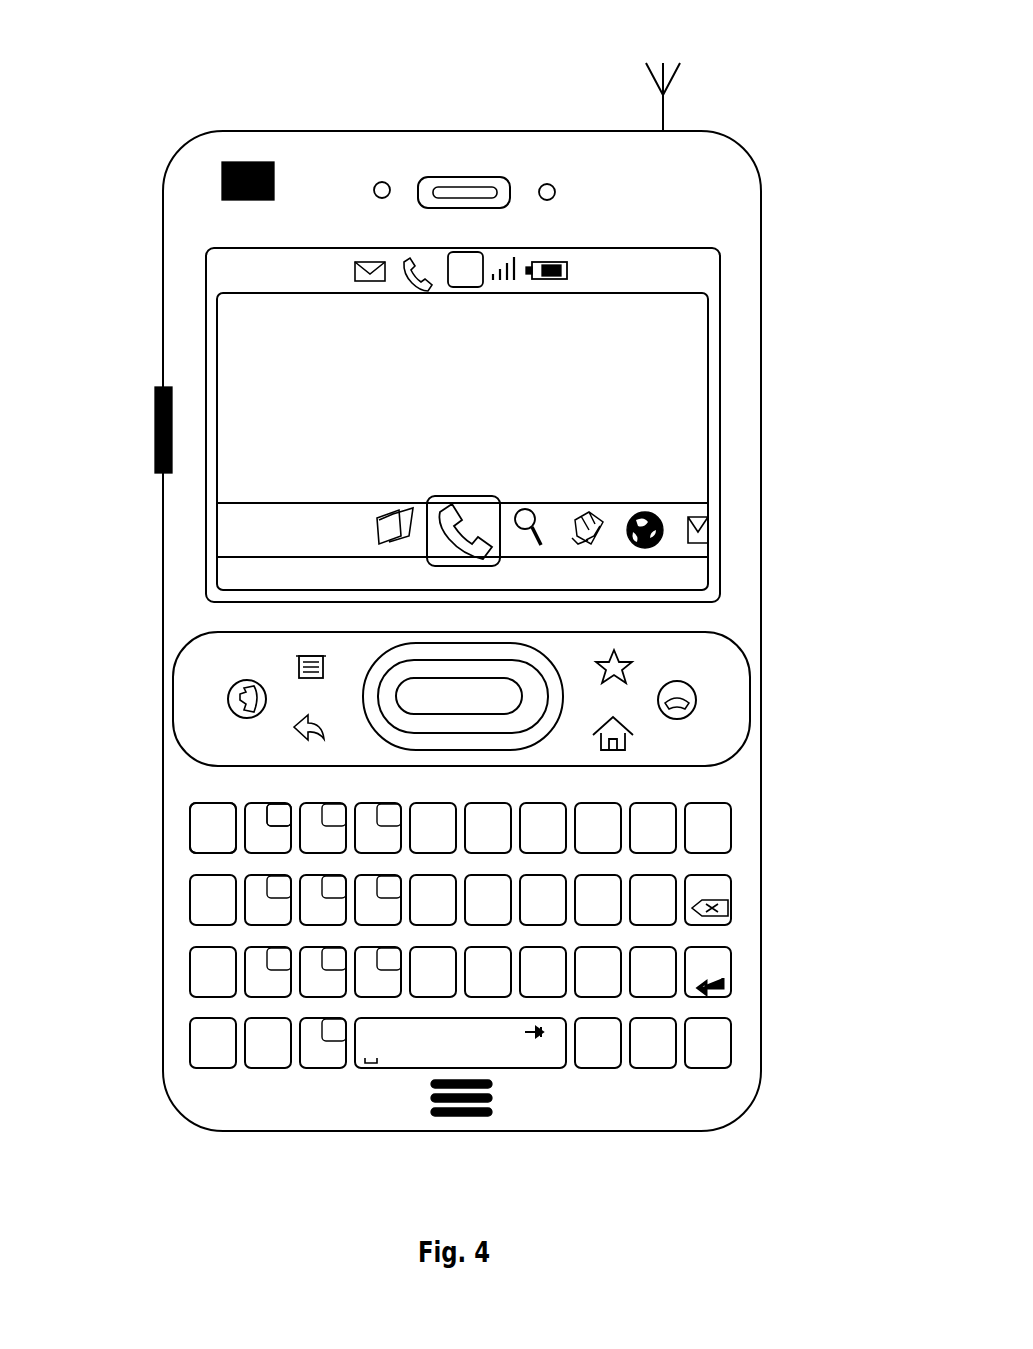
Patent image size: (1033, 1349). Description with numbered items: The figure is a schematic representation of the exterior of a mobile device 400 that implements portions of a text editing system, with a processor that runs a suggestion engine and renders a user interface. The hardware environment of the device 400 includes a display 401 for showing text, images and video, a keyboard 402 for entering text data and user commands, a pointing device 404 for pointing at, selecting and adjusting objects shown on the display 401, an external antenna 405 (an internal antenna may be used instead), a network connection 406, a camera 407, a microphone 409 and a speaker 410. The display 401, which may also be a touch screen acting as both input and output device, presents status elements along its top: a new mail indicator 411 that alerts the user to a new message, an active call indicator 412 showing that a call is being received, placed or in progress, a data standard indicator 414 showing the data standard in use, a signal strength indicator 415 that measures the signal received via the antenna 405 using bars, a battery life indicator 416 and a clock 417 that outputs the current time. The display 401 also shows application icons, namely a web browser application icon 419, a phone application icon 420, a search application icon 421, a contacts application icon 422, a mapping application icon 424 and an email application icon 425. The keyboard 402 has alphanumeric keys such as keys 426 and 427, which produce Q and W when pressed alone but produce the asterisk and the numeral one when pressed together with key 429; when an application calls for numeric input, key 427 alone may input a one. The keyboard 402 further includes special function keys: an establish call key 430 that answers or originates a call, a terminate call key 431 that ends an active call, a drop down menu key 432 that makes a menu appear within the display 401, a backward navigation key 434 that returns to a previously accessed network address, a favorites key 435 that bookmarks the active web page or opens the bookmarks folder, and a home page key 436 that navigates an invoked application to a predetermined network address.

The mobile device 400 is at (112, 50).
The display 401 is at (253, 345).
The keyboard 402 is at (698, 1098).
The pointing device 404 is at (478, 690).
The antenna 405 is at (663, 119).
The network connection 406 is at (155, 430).
The camera 407 is at (274, 180).
The microphone 409 is at (480, 1116).
The speaker 410 is at (471, 178).
The new mail indicator 411 is at (357, 264).
The active call indicator 412 is at (405, 262).
The data standard indicator 414 is at (450, 262).
The signal strength indicator 415 is at (508, 274).
The battery life indicator 416 is at (546, 262).
The clock 417 is at (640, 270).
The web browser application icon 419 is at (378, 521).
The phone application icon 420 is at (454, 496).
The search application icon 421 is at (522, 510).
The contacts application icon 422 is at (587, 510).
The mapping application icon 424 is at (645, 508).
The email application icon 425 is at (695, 515).
The key 426 is at (205, 815).
The key 427 is at (289, 813).
The key 429 is at (731, 1053).
The establish call key 430 is at (241, 688).
The terminate call key 431 is at (685, 682).
The drop down menu key 432 is at (311, 656).
The backward navigation key 434 is at (294, 727).
The favorites key 435 is at (614, 650).
The home page key 436 is at (625, 725).